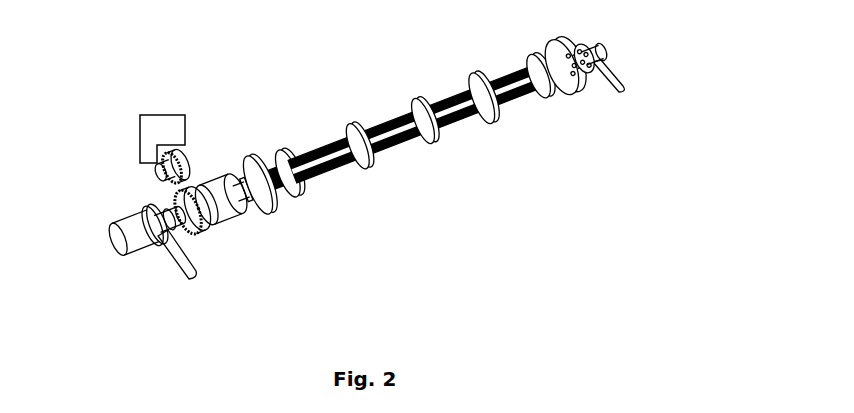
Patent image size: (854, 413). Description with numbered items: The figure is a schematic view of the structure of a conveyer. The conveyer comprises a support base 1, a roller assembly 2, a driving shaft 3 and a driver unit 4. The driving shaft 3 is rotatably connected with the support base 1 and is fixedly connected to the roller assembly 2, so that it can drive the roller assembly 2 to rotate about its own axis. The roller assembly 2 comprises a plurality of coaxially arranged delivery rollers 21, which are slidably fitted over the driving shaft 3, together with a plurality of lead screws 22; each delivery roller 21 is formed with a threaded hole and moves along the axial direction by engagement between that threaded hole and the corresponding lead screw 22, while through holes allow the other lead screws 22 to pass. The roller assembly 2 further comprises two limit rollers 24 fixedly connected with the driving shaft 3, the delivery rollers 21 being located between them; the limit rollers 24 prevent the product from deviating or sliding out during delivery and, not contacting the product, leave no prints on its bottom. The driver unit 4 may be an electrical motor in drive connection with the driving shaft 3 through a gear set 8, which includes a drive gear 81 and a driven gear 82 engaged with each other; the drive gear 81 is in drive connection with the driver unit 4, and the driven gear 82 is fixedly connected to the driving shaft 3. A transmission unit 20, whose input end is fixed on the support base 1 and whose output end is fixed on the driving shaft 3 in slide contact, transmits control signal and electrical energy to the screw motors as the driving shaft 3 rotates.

The support base 1 is at (192, 277).
The roller assembly 2 is at (424, 144).
The driving shaft 3 is at (240, 178).
The driver unit 4 is at (170, 132).
The gear set 8 is at (239, 233).
The transmission unit 20 is at (138, 232).
The delivery rollers 21 is at (425, 147).
The lead screws 22 is at (343, 173).
The limit rollers 24 is at (565, 108).
The drive gear 81 is at (185, 170).
The driven gear 82 is at (207, 230).